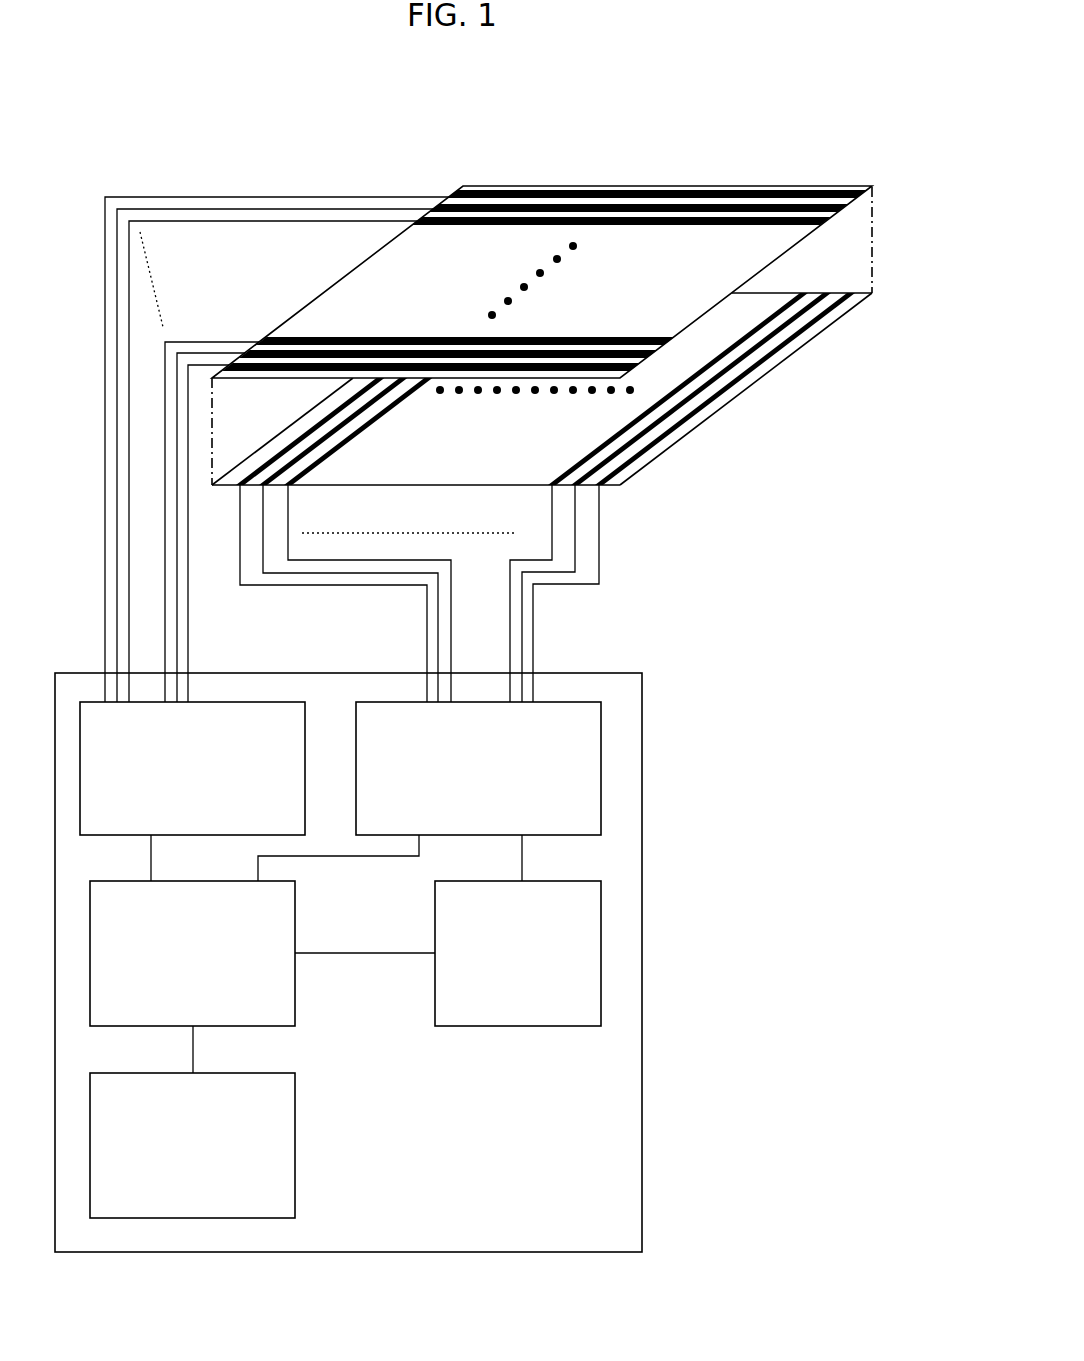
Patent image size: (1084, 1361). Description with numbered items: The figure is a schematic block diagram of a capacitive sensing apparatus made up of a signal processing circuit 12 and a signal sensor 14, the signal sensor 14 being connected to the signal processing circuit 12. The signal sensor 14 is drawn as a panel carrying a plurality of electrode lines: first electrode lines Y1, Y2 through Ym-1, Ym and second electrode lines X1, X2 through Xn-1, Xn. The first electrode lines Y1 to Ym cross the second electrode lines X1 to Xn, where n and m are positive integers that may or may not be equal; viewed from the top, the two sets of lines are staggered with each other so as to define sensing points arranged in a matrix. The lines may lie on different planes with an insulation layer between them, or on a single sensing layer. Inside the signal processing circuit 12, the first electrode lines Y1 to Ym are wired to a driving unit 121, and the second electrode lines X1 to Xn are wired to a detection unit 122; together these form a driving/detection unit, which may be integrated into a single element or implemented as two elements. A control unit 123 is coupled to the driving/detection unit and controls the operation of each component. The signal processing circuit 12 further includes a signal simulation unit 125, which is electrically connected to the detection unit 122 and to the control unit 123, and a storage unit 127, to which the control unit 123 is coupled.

The signal processing circuit 12 is at (327, 1252).
The signal sensor 14 is at (581, 296).
The driving unit 121 is at (173, 803).
The detection unit 122 is at (457, 803).
The control unit 123 is at (171, 989).
The signal simulation unit 125 is at (567, 1007).
The storage unit 127 is at (170, 1181).
The second electrode line X1 is at (300, 444).
The second electrode line X2 is at (340, 424).
The second electrode line Xn-1 is at (612, 474).
The second electrode line Xn is at (660, 441).
The first electrode line Y1 is at (318, 363).
The first electrode line Y2 is at (560, 352).
The first electrode line Ym-1 is at (795, 208).
The first electrode line Ym is at (705, 190).